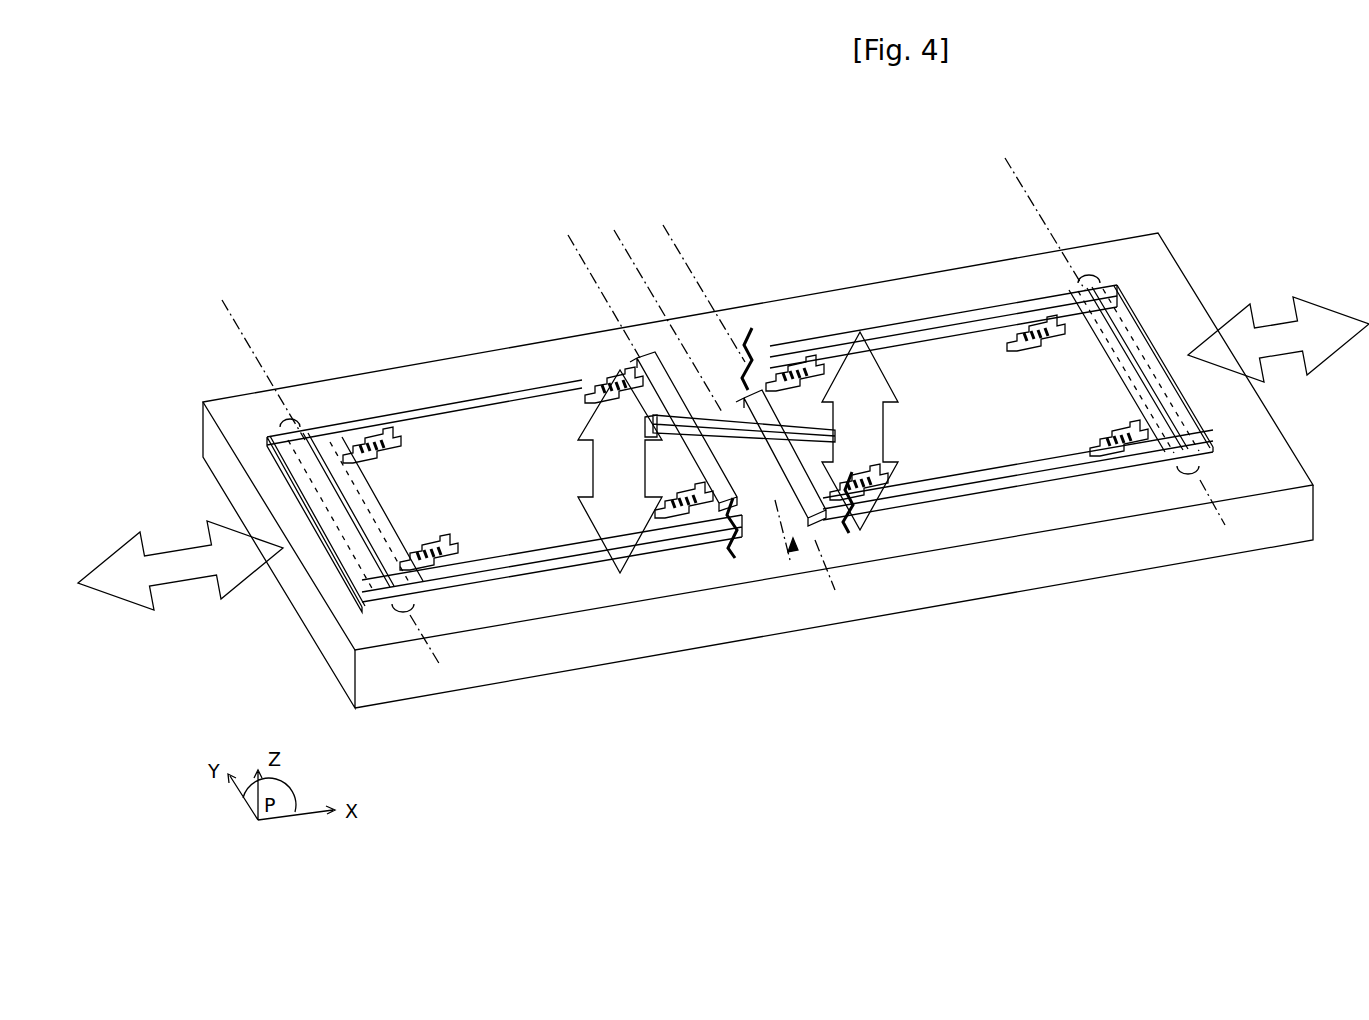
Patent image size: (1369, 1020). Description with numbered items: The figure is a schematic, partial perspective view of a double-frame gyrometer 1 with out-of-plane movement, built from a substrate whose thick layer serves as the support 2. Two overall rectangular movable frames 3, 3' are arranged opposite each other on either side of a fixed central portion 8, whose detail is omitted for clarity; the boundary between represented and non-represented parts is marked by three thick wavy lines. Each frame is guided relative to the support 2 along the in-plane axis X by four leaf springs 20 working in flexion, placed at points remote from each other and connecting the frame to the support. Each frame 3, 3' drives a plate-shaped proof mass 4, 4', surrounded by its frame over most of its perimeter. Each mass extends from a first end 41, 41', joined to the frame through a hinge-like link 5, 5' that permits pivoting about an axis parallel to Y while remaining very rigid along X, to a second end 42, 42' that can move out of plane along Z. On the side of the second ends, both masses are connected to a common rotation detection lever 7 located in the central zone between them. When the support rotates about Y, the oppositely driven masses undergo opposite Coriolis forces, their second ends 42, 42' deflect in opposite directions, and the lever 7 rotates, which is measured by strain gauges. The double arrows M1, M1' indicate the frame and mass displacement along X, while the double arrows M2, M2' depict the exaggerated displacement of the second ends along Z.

The gyrometer 1 is at (472, 738).
The support 2 is at (380, 690).
The movable frame 3 is at (504, 552).
The movable frame 3' is at (991, 461).
The proof mass 4 is at (473, 564).
The proof mass 4' is at (1050, 453).
The link 5 is at (354, 586).
The link 5' is at (1188, 404).
The rotation detection lever 7 is at (758, 441).
The fixed central portion 8 is at (782, 507).
The spring 20 is at (350, 422).
The first end 41 is at (338, 466).
The first end 41' is at (1145, 324).
The second end 42 is at (679, 413).
The second end 42' is at (811, 515).
The double arrow M1 is at (180, 565).
The double arrow M1' is at (1278, 339).
The double arrow M2 is at (620, 471).
The double arrow M2' is at (860, 431).